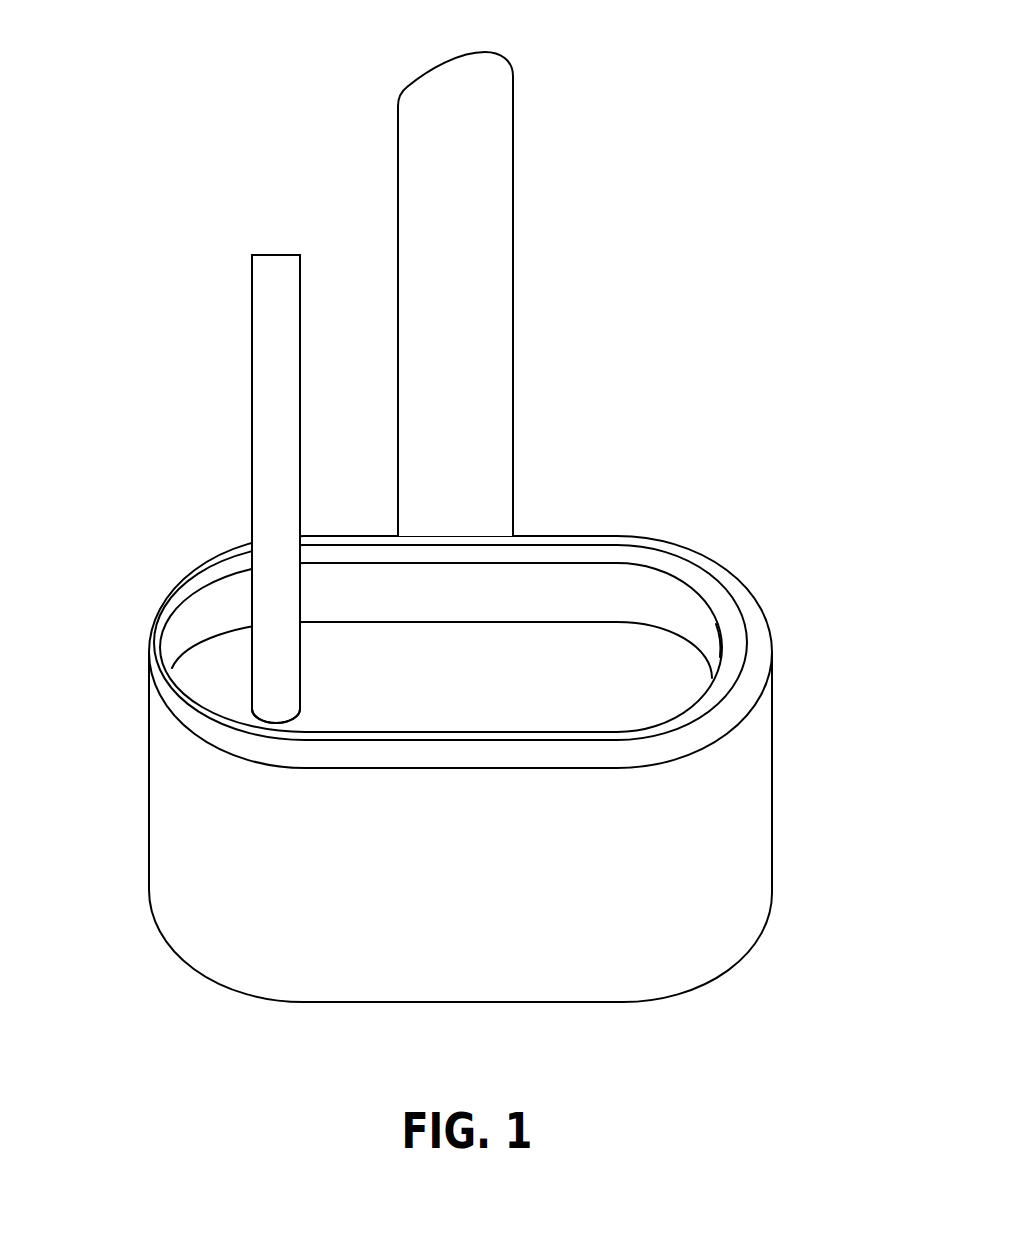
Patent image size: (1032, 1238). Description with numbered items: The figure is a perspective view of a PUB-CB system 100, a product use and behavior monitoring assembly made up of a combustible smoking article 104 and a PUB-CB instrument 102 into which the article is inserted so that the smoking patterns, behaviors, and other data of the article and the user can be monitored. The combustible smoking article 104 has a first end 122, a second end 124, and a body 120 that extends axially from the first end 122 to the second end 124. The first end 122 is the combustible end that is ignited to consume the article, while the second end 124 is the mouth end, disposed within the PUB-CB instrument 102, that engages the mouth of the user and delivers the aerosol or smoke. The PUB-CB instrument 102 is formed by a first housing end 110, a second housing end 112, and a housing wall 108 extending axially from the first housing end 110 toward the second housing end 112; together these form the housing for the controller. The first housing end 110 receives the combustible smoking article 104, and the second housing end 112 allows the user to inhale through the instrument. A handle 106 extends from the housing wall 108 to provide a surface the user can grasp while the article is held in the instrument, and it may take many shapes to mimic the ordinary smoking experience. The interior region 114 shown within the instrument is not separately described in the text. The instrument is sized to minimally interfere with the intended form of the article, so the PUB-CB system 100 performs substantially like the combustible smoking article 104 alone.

The PUB-CB system 100 is at (140, 85).
The PUB-CB instrument 102 is at (810, 777).
The combustible smoking article 104 is at (240, 354).
The handle 106 is at (513, 332).
The housing wall 108 is at (149, 818).
The first housing end 110 is at (649, 512).
The second housing end 112 is at (604, 1018).
The cavity 114 is at (652, 653).
The body 120 is at (252, 452).
The first end 122 is at (280, 253).
The second end 124 is at (250, 712).